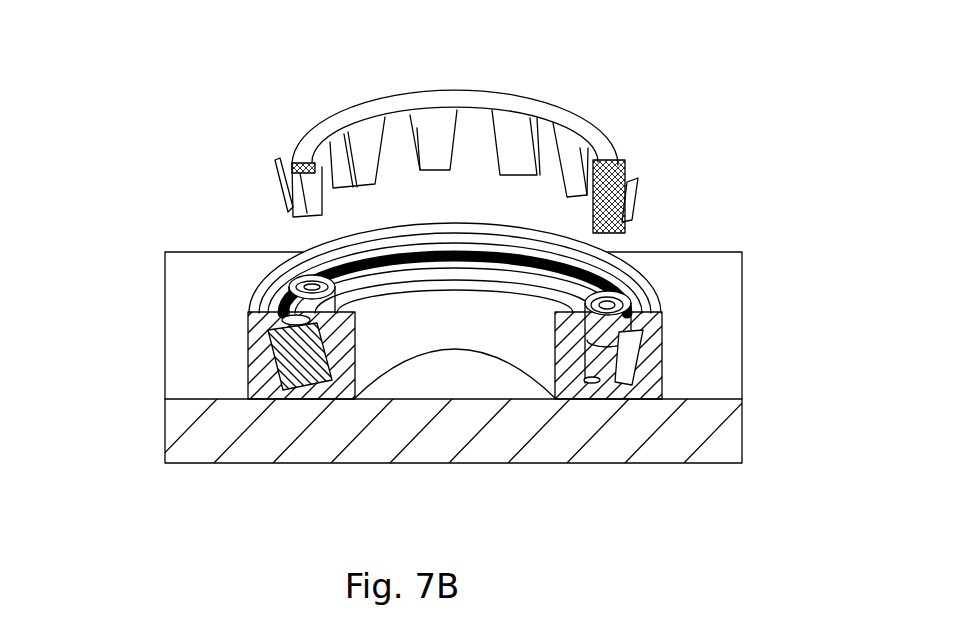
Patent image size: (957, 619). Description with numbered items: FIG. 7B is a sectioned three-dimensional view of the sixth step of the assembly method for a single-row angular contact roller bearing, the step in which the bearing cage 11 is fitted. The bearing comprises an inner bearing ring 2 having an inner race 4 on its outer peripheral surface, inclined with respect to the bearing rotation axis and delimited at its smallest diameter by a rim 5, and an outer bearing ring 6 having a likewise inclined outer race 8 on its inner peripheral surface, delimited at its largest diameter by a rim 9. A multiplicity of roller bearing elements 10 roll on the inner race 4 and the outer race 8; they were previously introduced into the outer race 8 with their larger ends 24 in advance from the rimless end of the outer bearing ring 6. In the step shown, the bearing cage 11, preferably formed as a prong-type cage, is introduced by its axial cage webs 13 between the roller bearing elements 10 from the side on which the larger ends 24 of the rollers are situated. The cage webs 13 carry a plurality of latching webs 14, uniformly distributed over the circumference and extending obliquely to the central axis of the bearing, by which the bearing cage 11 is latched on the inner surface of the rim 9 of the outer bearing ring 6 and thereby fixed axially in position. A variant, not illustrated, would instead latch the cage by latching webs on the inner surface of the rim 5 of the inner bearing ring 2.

The inner bearing ring 2 is at (600, 273).
The inner race 4 is at (655, 345).
The rim 5 is at (600, 380).
The outer bearing ring 6 is at (277, 278).
The outer race 8 is at (280, 368).
The rim 9 is at (275, 313).
The roller bearing elements 10 is at (310, 283).
The bearing cage 11 is at (393, 100).
The cage webs 13 is at (518, 133).
The latching webs 14 is at (637, 182).
The larger ends 24 is at (615, 298).